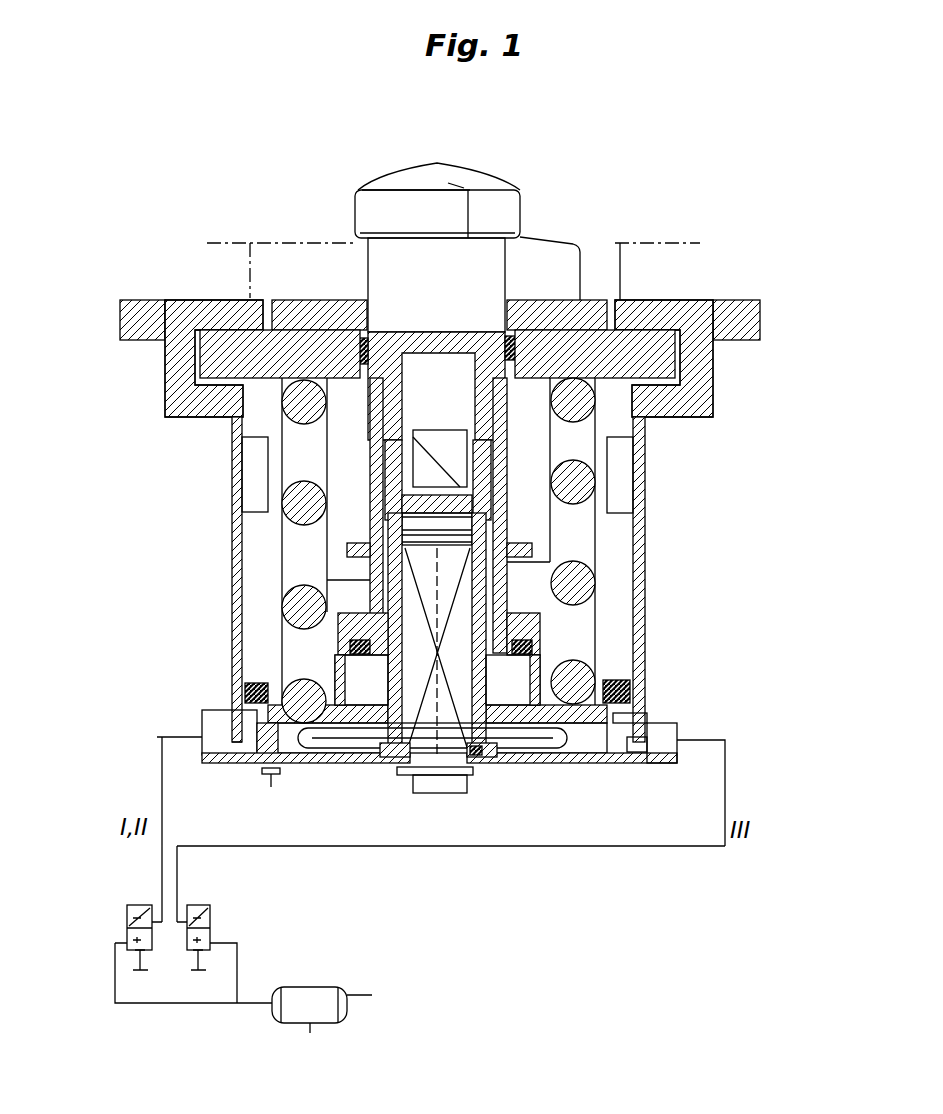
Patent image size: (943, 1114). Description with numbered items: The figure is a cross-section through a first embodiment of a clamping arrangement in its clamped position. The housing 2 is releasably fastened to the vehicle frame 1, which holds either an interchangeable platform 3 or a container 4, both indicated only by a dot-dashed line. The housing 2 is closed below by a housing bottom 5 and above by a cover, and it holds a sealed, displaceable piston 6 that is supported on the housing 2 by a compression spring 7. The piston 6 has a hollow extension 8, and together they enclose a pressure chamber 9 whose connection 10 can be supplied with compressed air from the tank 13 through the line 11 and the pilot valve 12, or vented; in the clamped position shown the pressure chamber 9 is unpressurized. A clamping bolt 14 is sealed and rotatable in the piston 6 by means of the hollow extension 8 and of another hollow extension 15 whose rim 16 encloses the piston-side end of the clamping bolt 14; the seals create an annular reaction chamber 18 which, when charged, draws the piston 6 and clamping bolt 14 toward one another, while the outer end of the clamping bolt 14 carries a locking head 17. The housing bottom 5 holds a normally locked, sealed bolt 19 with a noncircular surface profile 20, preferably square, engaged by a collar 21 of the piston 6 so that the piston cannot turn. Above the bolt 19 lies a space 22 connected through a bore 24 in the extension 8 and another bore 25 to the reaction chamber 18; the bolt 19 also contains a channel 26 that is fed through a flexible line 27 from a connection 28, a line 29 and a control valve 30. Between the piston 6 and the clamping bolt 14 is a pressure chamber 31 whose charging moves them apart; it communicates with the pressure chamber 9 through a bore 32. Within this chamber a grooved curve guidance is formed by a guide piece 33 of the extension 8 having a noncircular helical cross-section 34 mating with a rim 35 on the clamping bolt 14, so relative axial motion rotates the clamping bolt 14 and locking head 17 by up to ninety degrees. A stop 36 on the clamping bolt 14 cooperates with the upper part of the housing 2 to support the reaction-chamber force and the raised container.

The vehicle frame 1 is at (735, 300).
The housing 2 is at (645, 578).
The interchangeable platform 3 is at (648, 266).
The container 4 is at (439, 358).
The housing bottom 5 is at (627, 755).
The piston 6 is at (663, 758).
The compression spring 7 is at (258, 685).
The hollow extension 8 is at (487, 678).
The pressure chamber 9 is at (290, 752).
The connection 10 is at (204, 722).
The line 11 is at (160, 768).
The pilot valve 12 is at (127, 928).
The tank 13 is at (325, 990).
The clamping bolt 14 is at (425, 297).
The hollow extension 15 is at (618, 695).
The rim 16 is at (540, 618).
The locking head 17 is at (458, 187).
The reaction chamber 18 is at (517, 634).
The bolt 19 is at (443, 655).
The noncircular surface profile 20 is at (433, 745).
The collar 21 is at (533, 747).
The space 22 is at (450, 522).
The bore 24 is at (375, 522).
The bore 25 is at (345, 633).
The channel 26 is at (478, 755).
The flexible line 27 is at (582, 757).
The connection 28 is at (667, 745).
The line 29 is at (725, 793).
The control valve 30 is at (210, 928).
The pressure chamber 31 is at (485, 447).
The bore 32 is at (483, 555).
The guide piece 33 is at (415, 485).
The noncircular helical cross-section 34 is at (415, 427).
The rim 35 is at (490, 425).
The stop 36 is at (347, 546).